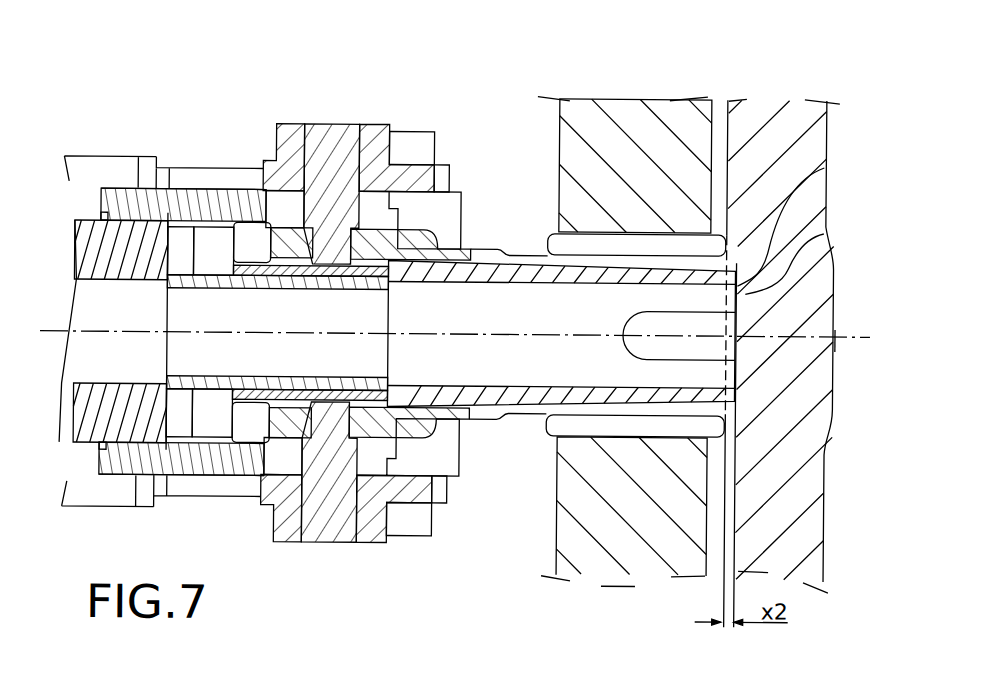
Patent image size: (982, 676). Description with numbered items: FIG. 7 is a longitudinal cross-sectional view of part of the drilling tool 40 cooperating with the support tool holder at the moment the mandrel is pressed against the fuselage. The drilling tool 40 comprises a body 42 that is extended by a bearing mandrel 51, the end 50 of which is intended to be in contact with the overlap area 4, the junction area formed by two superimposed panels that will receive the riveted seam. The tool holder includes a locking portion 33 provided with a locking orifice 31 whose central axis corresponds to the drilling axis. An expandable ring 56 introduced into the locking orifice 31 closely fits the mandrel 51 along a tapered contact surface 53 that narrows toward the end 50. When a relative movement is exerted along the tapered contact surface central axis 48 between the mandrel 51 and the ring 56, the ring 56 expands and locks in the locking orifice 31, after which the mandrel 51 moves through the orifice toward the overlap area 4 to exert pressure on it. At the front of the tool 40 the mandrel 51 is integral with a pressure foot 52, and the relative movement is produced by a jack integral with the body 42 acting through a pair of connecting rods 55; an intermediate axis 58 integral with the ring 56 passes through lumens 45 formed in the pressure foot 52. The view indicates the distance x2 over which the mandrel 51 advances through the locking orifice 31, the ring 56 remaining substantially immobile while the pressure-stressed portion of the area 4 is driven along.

The overlap area 4 is at (766, 102).
The locking orifice 31 is at (633, 234).
The locking portion 33 is at (617, 112).
The drilling tool 40 is at (78, 148).
The body 42 is at (83, 227).
The lumens 45 is at (287, 210).
The tapered contact surface central axis 48 is at (40, 330).
The end of the mandrel 50 is at (823, 230).
The bearing mandrel 51 is at (470, 277).
The pressure foot 52 is at (262, 158).
The tapered contact surface 53 is at (520, 407).
The connecting rods 55 is at (378, 133).
The expandable ring 56 is at (823, 163).
The intermediate axis 58 is at (333, 132).